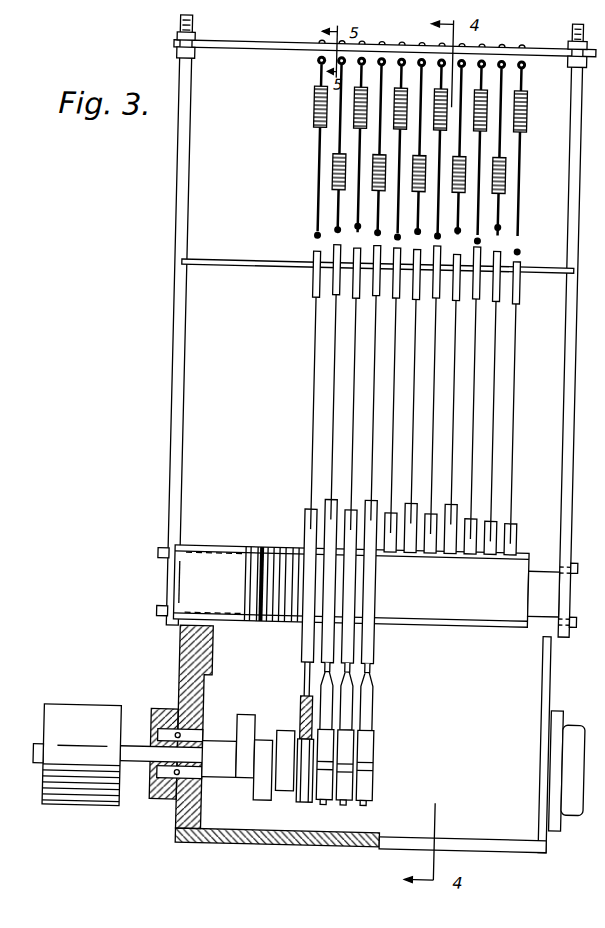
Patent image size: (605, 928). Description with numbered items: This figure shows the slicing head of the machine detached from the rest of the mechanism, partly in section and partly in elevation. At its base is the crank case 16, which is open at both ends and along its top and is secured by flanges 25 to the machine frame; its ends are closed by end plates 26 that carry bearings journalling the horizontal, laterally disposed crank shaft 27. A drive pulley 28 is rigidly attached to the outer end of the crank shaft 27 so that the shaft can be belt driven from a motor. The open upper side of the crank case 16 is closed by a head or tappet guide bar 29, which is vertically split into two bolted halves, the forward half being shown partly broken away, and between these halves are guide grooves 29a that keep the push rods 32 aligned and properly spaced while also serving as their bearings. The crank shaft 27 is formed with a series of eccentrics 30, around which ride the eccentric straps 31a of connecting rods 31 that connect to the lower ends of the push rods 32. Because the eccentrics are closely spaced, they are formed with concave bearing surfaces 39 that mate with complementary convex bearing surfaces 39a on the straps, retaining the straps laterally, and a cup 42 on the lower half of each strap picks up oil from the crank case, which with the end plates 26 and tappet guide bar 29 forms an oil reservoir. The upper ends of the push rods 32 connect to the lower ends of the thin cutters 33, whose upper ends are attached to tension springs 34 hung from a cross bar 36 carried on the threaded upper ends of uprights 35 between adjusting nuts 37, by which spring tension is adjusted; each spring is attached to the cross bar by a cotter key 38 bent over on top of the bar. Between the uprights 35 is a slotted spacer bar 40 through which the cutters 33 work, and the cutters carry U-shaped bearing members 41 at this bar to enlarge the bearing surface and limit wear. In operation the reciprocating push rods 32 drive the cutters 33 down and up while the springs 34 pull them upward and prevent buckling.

The crank case 16 is at (464, 693).
The flanges 25 is at (245, 844).
The end plates 26 is at (194, 667).
The crank shaft 27 is at (141, 755).
The drive pulley 28 is at (76, 755).
The tappet guide bar 29 is at (367, 587).
The guide grooves 29a is at (279, 628).
The eccentrics 30 is at (254, 757).
The connecting rods 31 is at (327, 694).
The eccentric straps 31a is at (334, 794).
The push rods 32 is at (336, 551).
The cutters 33 is at (360, 412).
The tension springs 34 is at (327, 162).
The uprights 35 is at (187, 166).
The cross bar 36 is at (259, 49).
The adjusting nuts 37 is at (184, 48).
The cotter key 38 is at (516, 48).
The concave bearing surfaces 39 is at (278, 744).
The convex bearing surfaces 39a is at (308, 793).
The spacer bar 40 is at (221, 265).
The bearing members 41 is at (334, 286).
The cup 42 is at (354, 798).